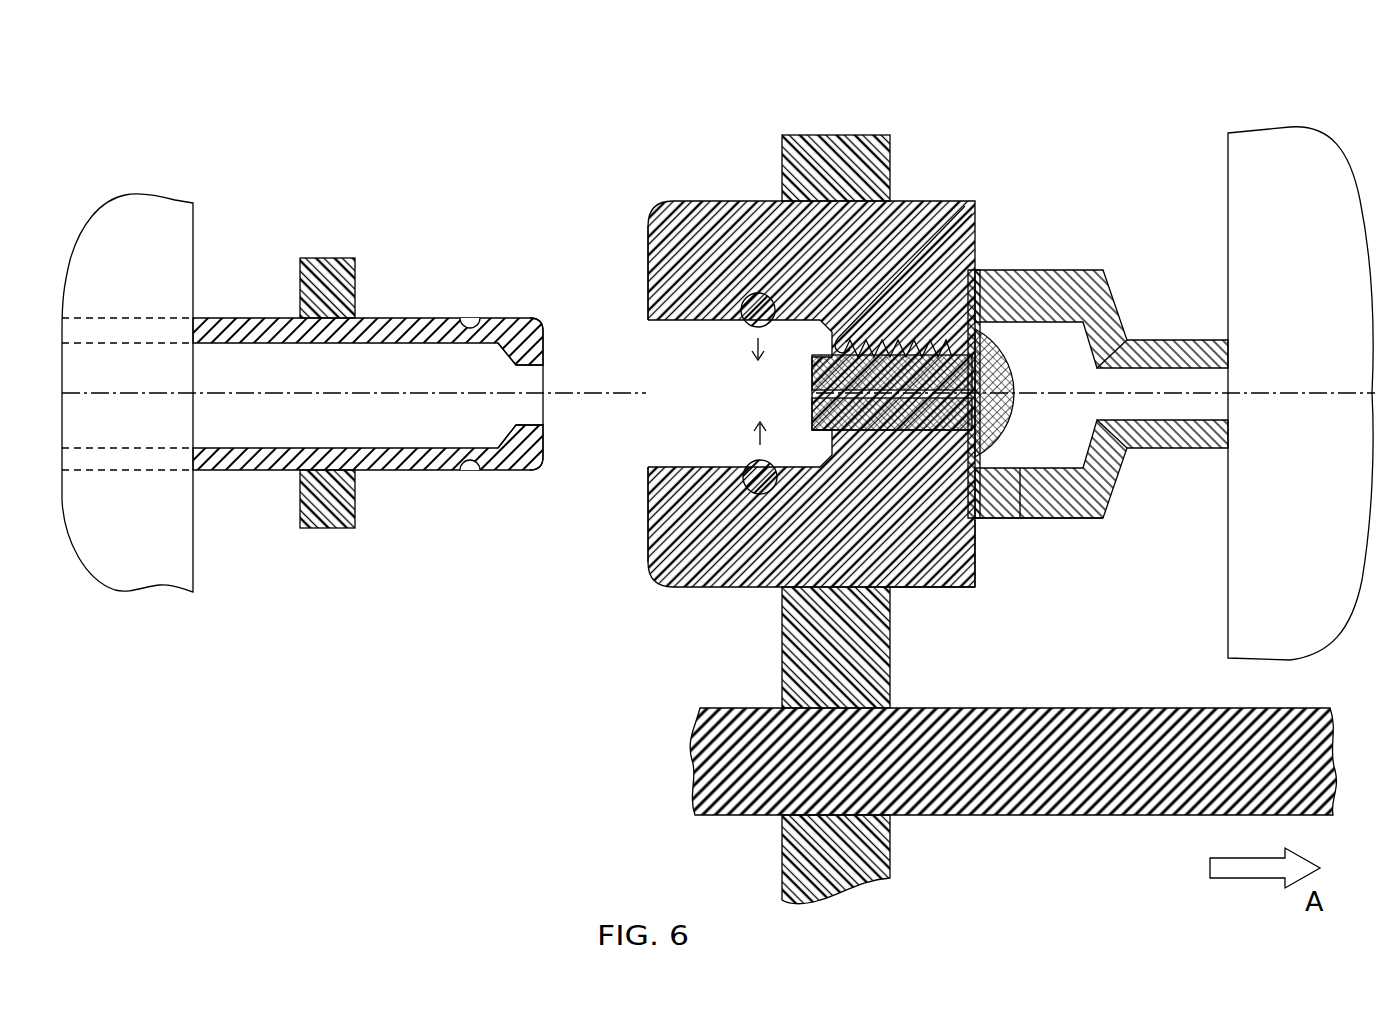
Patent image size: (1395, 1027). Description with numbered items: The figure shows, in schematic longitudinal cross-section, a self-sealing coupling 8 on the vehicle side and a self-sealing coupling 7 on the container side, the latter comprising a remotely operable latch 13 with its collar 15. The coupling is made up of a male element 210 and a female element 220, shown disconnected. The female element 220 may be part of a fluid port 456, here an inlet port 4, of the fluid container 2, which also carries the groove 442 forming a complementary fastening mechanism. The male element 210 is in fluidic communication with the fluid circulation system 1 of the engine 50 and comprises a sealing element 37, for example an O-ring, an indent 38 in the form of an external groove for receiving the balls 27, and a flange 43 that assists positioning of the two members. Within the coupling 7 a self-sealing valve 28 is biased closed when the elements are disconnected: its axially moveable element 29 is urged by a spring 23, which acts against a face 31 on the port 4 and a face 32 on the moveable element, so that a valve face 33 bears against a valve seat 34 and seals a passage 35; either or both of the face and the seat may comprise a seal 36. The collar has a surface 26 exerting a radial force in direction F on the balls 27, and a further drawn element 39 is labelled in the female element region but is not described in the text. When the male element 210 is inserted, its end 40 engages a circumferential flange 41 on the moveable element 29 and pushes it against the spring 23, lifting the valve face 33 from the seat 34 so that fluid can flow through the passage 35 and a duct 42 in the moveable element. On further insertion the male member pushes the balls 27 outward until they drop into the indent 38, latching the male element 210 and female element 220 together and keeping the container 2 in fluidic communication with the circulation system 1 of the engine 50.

The fluid circulation system 1 is at (180, 320).
The fluid container 2 is at (1120, 880).
The inlet port 4 is at (1186, 339).
The coupling 7 is at (1098, 303).
The coupling 8 is at (339, 452).
The latch 13 is at (996, 610).
The collar 15 is at (958, 590).
The spring 23 is at (950, 428).
The surface 26 is at (748, 296).
The balls 27 is at (745, 325).
The self-sealing valve 28 is at (1050, 519).
The axially moveable element 29 is at (990, 520).
The face 31 is at (978, 290).
The face 32 is at (936, 202).
The valve face 33 is at (1010, 272).
The valve seat 34 is at (1060, 405).
The passage 35 is at (1055, 272).
The seal 36 is at (1022, 519).
The sealing element 37 is at (540, 472).
The indent 38 is at (469, 317).
The latch arm 39 is at (908, 200).
The end 40 is at (545, 332).
The flange 41 is at (811, 430).
The duct 42 is at (811, 372).
The flange 43 is at (357, 492).
The engine 50 is at (137, 180).
The male element 210 is at (364, 441).
The female element 220 is at (841, 375).
The groove 442 is at (768, 825).
The fluid port 456 is at (1151, 140).